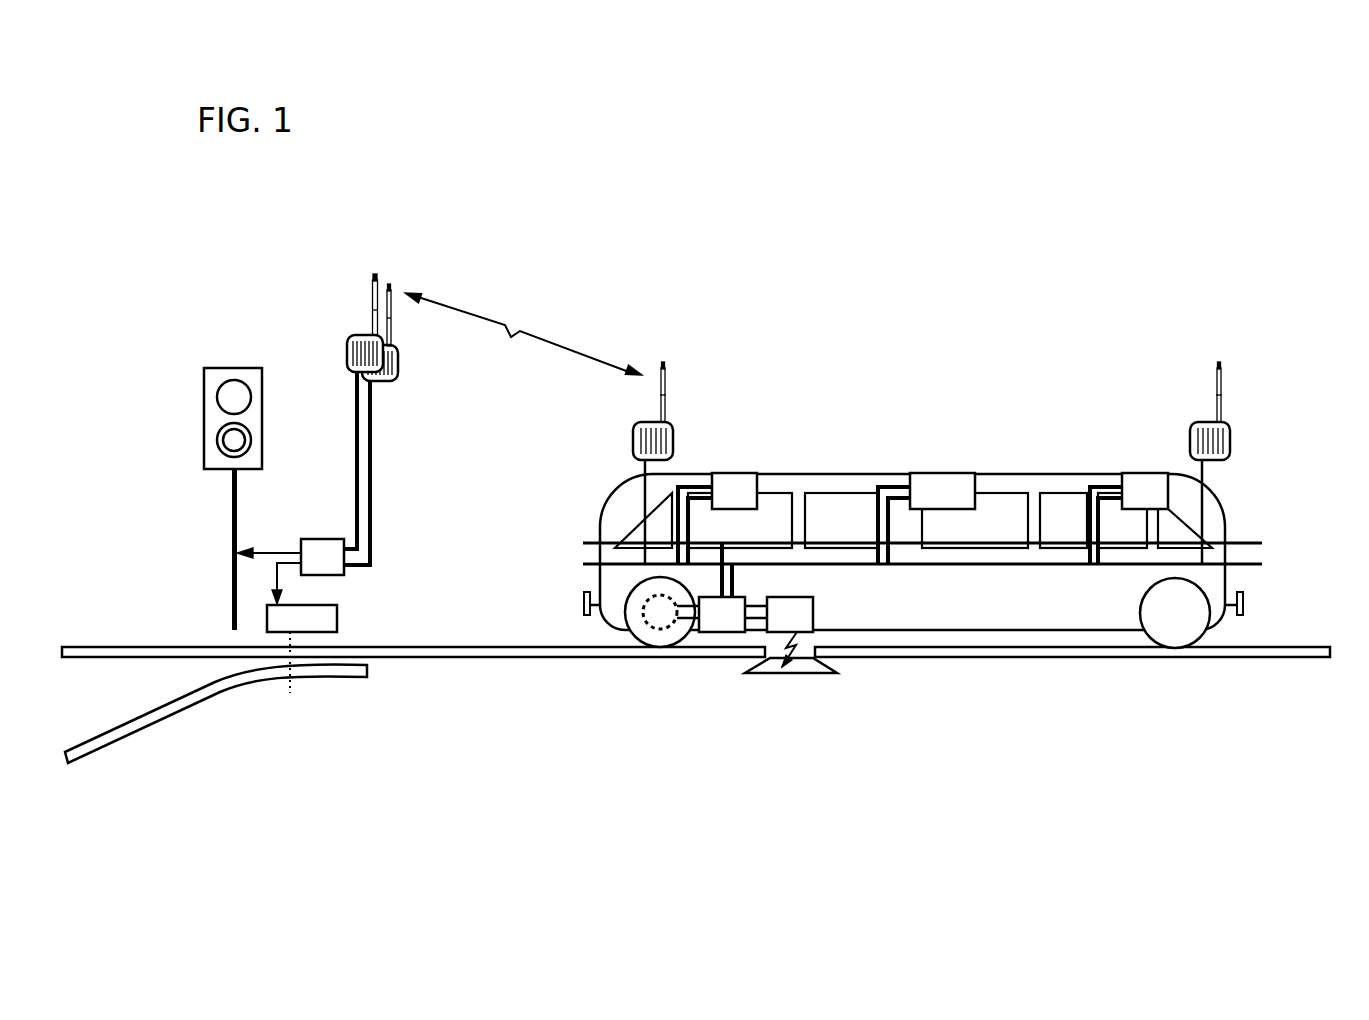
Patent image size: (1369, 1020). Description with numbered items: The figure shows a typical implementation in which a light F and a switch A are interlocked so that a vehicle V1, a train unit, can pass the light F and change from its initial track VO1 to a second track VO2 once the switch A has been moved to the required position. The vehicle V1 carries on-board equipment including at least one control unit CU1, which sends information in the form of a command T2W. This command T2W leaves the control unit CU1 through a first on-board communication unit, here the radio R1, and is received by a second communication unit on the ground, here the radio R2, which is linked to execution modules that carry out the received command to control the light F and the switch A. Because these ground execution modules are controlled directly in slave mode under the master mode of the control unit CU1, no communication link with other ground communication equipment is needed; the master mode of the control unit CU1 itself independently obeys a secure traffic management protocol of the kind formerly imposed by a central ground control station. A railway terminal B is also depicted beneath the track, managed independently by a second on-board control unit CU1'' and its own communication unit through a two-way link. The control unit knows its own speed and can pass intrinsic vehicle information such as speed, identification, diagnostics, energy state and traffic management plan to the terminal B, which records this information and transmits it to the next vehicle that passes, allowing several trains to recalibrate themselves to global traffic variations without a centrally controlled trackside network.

The light F is at (232, 528).
The radio R2 is at (347, 352).
The switch A is at (337, 617).
The initial track VO1 is at (447, 654).
The second track VO2 is at (200, 703).
The command T2W is at (549, 338).
The radio R1 is at (633, 440).
The control unit CU1 is at (942, 461).
The vehicle V1 is at (1228, 515).
The second control unit CU1'' is at (711, 656).
The railway terminal B is at (790, 665).